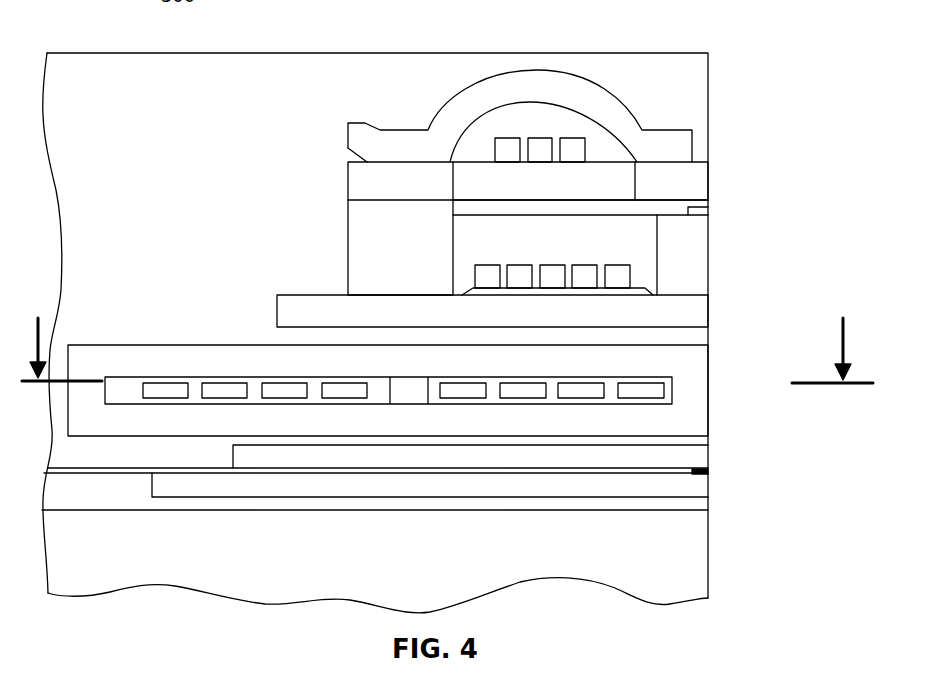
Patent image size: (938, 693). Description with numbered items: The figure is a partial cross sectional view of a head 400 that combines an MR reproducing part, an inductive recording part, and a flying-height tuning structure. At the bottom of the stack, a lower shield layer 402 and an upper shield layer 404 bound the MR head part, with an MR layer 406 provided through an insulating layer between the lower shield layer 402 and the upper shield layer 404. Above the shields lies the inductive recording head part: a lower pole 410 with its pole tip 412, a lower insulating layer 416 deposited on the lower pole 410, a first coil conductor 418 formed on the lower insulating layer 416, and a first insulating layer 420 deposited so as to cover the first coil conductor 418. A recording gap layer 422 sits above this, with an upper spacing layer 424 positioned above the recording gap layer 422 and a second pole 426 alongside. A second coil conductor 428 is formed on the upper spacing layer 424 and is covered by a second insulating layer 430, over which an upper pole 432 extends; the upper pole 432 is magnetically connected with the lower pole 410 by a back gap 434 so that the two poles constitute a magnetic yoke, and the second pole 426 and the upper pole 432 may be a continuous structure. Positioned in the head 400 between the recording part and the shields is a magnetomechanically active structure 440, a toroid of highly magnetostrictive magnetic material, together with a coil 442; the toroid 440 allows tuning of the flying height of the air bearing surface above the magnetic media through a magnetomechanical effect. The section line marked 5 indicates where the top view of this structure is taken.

The head 400 is at (772, 62).
The lower shield layer 402 is at (708, 489).
The upper shield layer 404 is at (708, 456).
The MR layer 406 is at (708, 475).
The lower pole 410 is at (708, 318).
The P1 pole tip 412 is at (708, 262).
The lower insulating layer 416 is at (647, 290).
The first coil conductor 418 is at (627, 265).
The first insulating layer 420 is at (645, 237).
The recording gap layer 422 is at (675, 203).
The upper spacing layer 424 is at (476, 168).
The second pole 426 is at (708, 175).
The second coil conductor 428 is at (548, 139).
The second insulating layer 430 is at (575, 125).
The upper pole 432 is at (670, 130).
The back gap 434 is at (343, 212).
The magnetomechanically active structure 440 is at (710, 349).
The coil 442 is at (175, 383).
The section line 5- 5 is at (447, 334).